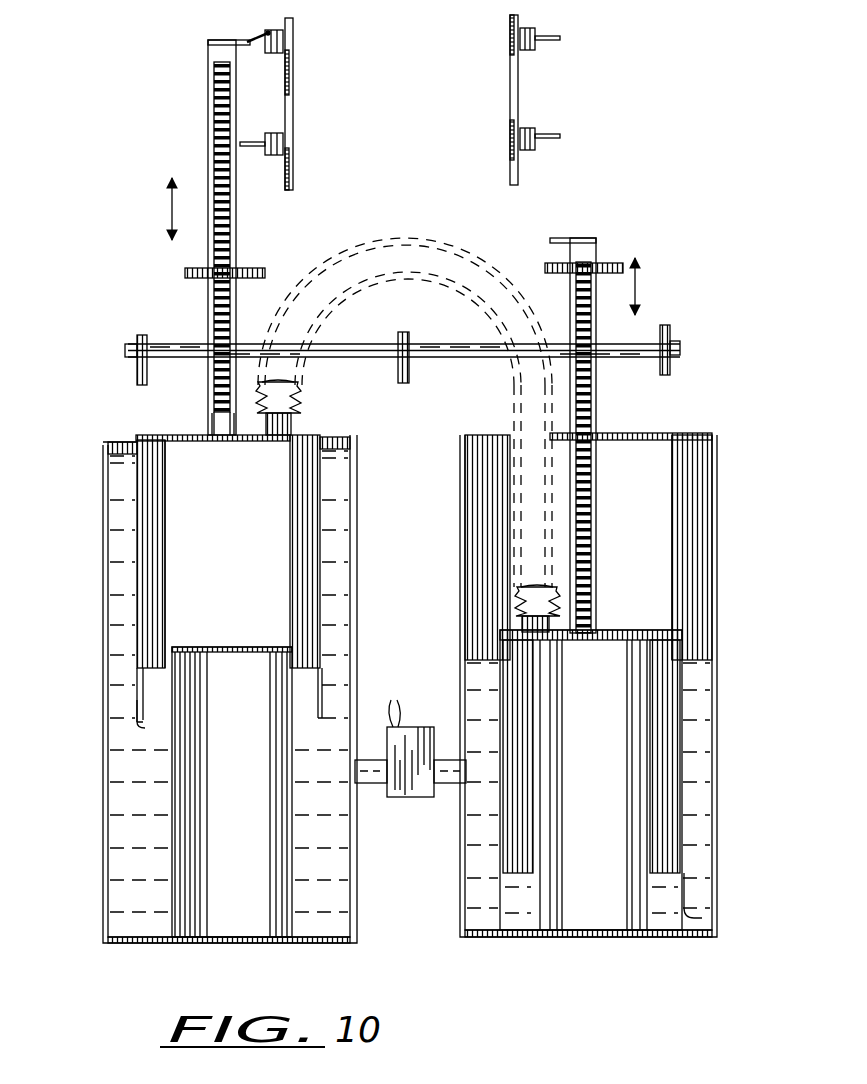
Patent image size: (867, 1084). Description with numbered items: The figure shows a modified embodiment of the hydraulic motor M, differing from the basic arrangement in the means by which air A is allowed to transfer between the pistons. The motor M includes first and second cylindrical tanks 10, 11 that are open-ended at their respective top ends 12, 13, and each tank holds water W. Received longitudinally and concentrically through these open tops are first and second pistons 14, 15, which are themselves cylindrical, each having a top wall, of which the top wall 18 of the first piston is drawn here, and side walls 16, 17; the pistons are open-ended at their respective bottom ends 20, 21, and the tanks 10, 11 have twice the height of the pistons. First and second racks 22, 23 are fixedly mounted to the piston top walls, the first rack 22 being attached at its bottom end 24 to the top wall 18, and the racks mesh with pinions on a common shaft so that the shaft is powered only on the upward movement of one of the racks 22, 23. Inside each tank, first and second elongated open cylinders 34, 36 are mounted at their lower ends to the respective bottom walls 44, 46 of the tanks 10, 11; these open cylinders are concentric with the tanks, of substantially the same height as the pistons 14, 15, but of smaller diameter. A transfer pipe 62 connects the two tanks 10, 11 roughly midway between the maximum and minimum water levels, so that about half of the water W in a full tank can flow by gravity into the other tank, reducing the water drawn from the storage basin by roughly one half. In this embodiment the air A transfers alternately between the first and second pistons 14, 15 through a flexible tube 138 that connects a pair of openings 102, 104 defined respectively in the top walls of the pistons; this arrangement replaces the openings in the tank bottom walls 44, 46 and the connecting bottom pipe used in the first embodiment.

The first cylindrical tank 10 is at (107, 802).
The second cylindrical tank 11 is at (715, 576).
The top end of first tank 12 is at (103, 442).
The top end of second tank 13 is at (706, 433).
The first piston 14 is at (132, 531).
The second piston 15 is at (686, 712).
The side wall of first piston 16 is at (137, 598).
The side wall of second piston 17 is at (686, 748).
The top wall of first piston 18 is at (185, 442).
The bottom end of first piston 20 is at (140, 718).
The bottom end of second piston 21 is at (690, 917).
The first rack 22 is at (207, 301).
The second rack 23 is at (599, 400).
The bottom end of first rack 24 is at (213, 432).
The first elongated open cylinder 34 is at (297, 902).
The second elongated open cylinder 36 is at (530, 906).
The bottom wall of first tank 44 is at (160, 945).
The bottom wall of second tank 46 is at (668, 938).
The transfer pipe 62 is at (393, 775).
The opening on first piston top wall 102 is at (288, 425).
The opening on second piston top wall 104 is at (525, 628).
The flexible tube 138 is at (298, 398).
The air A is at (240, 900).
The water W is at (130, 886).
The hydraulic motor M is at (127, 424).